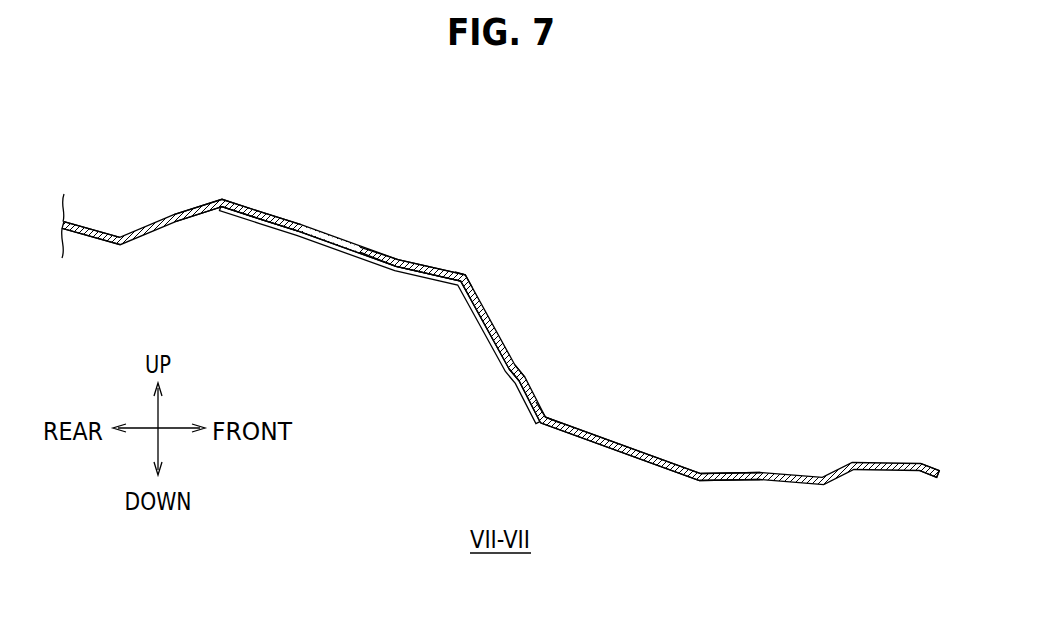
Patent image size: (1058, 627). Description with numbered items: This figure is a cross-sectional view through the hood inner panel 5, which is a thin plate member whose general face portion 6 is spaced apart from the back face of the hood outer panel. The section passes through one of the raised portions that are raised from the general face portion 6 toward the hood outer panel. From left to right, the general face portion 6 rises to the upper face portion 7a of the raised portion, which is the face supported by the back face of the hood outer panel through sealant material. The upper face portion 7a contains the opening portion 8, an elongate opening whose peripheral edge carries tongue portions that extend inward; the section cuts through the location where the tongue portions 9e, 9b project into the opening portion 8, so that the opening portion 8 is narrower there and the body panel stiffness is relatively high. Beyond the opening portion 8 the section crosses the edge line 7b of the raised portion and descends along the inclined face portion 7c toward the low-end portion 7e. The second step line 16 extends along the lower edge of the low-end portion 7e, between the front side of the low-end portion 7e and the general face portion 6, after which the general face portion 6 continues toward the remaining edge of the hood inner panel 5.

The hood inner panel 5 is at (940, 468).
The general face portion 6 is at (101, 227).
The upper face portion 7a is at (252, 207).
The edge line 7b is at (470, 277).
The inclined face portion 7c is at (166, 221).
The low-end portion 7e is at (532, 394).
The opening portion 8 is at (356, 243).
The tongue portion 9b is at (414, 253).
The tongue portion 9e is at (290, 219).
The second step line 16 is at (548, 418).